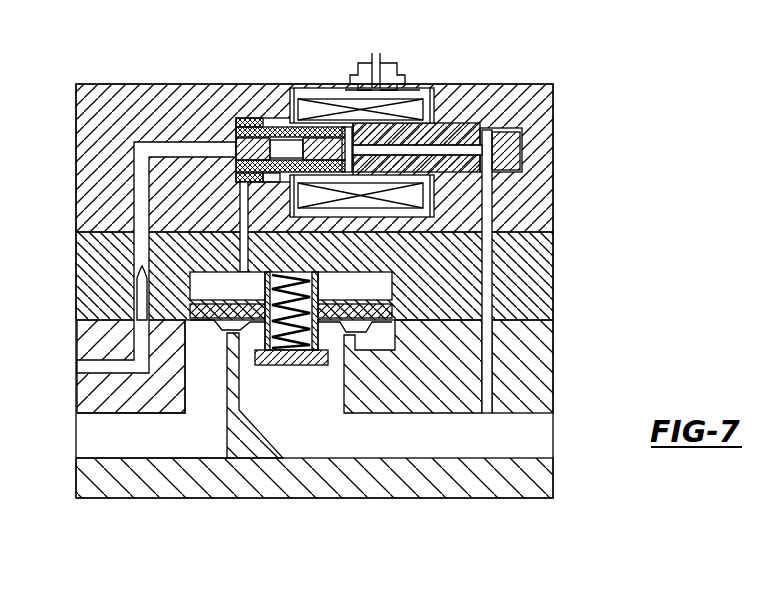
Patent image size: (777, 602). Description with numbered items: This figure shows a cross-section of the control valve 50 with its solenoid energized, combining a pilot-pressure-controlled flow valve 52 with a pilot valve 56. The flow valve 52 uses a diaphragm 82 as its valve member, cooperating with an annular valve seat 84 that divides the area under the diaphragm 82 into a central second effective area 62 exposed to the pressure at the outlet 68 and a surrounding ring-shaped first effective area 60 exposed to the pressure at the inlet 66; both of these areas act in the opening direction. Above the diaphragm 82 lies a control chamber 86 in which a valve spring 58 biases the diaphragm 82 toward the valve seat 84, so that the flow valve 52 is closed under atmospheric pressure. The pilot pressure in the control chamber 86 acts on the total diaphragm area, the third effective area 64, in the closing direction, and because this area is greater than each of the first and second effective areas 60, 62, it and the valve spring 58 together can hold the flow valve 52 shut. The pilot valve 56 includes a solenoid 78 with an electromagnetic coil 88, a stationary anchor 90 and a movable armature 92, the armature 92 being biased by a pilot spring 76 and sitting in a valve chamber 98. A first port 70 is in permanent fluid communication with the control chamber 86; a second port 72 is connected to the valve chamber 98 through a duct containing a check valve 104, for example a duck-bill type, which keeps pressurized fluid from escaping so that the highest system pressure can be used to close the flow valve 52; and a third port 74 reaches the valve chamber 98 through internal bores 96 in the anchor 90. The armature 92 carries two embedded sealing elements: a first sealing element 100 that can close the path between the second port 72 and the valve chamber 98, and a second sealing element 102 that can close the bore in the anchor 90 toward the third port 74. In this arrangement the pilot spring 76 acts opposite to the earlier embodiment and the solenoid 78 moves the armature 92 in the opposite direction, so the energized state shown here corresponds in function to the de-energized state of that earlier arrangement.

The control valve 50 is at (56, 0).
The flow valve 52 is at (262, 385).
The pilot valve 56 is at (470, 70).
The valve spring 58 is at (315, 290).
The first effective area 60 is at (223, 330).
The second effective area 62 is at (284, 366).
The third effective area 64 is at (187, 260).
The inlet 66 is at (87, 443).
The outlet 68 is at (382, 443).
The first port 70 is at (242, 195).
The second port 72 is at (183, 152).
The third port 74 is at (487, 172).
The pilot spring 76 is at (276, 138).
The solenoid 78 is at (340, 104).
The diaphragm 82 is at (310, 367).
The valve seat 84 is at (208, 278).
The control chamber 86 is at (380, 318).
The electromagnetic coil 88 is at (405, 103).
The stationary anchor 90 is at (470, 125).
The movable armature 92 is at (255, 112).
The internal bores 96 is at (500, 127).
The valve chamber 98 is at (371, 58).
The first sealing element 100 is at (236, 125).
The second sealing element 102 is at (338, 140).
The check valve 104 is at (140, 268).